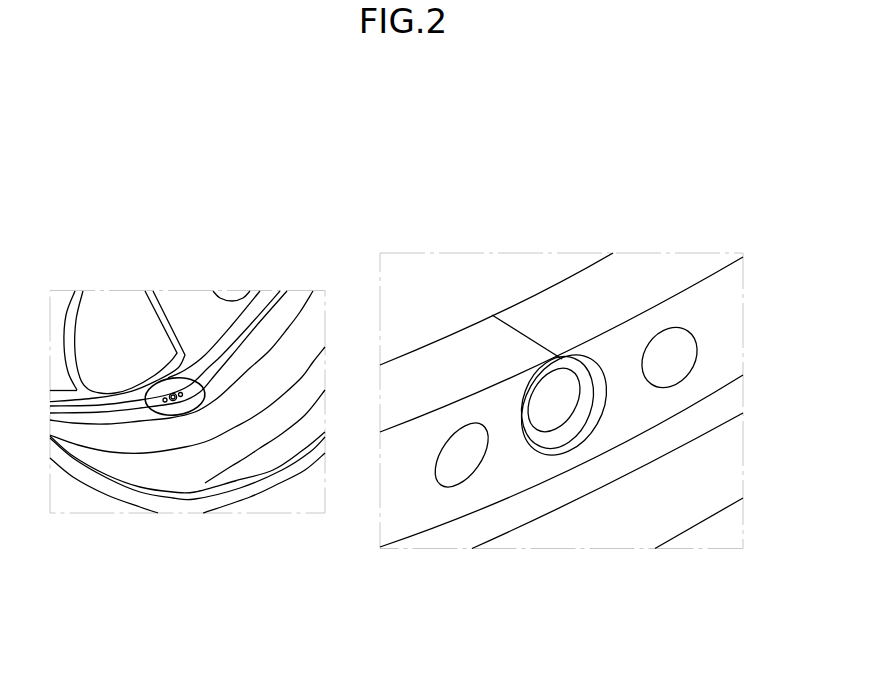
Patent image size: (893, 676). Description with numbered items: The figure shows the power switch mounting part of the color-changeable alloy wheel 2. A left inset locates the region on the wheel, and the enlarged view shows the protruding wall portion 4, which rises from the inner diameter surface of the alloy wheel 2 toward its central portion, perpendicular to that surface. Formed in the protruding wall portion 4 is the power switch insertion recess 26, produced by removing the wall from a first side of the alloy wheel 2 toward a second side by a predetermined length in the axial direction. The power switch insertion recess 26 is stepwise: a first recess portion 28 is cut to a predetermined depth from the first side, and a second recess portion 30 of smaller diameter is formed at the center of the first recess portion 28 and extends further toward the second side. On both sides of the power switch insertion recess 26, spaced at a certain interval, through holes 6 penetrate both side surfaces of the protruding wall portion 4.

The alloy wheel 2 is at (188, 433).
The protruding wall portion 4 is at (663, 278).
The through holes 6 is at (665, 365).
The power switch insertion recess 26 is at (551, 285).
The first recess portion 28 is at (578, 368).
The second recess portion 30 is at (552, 397).